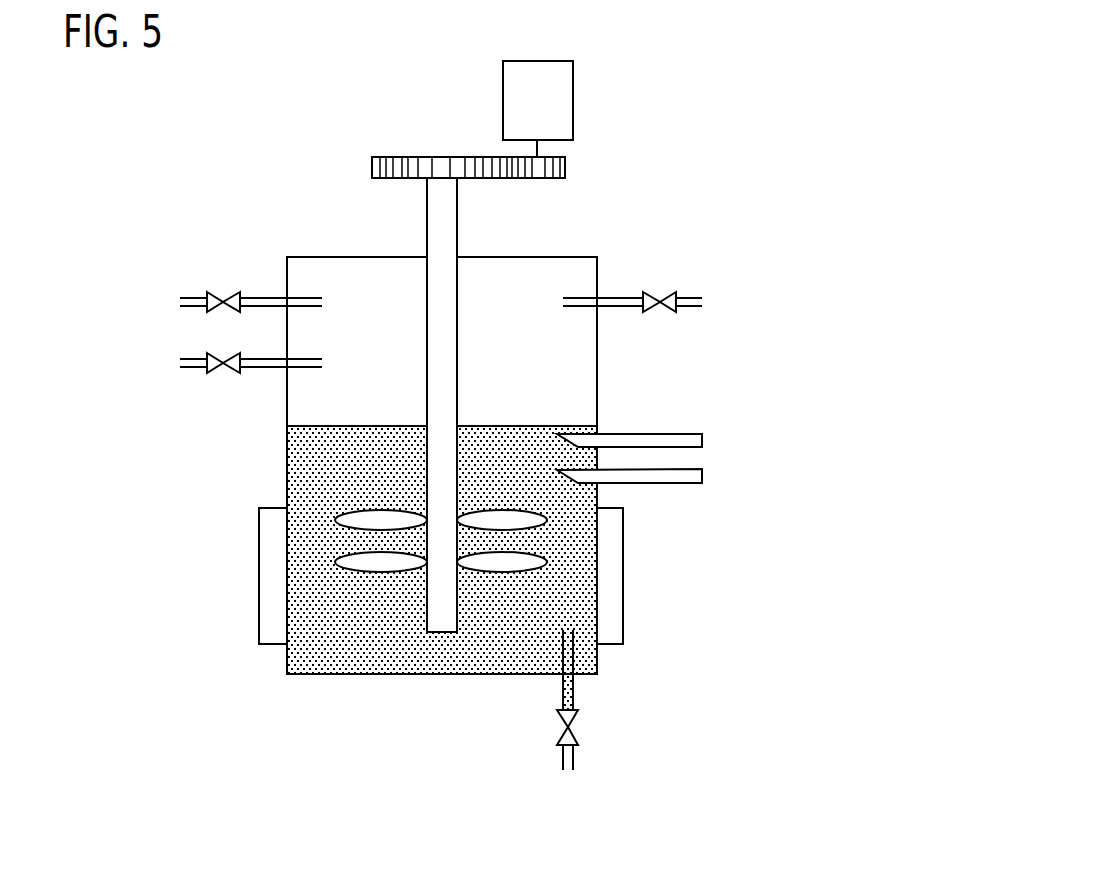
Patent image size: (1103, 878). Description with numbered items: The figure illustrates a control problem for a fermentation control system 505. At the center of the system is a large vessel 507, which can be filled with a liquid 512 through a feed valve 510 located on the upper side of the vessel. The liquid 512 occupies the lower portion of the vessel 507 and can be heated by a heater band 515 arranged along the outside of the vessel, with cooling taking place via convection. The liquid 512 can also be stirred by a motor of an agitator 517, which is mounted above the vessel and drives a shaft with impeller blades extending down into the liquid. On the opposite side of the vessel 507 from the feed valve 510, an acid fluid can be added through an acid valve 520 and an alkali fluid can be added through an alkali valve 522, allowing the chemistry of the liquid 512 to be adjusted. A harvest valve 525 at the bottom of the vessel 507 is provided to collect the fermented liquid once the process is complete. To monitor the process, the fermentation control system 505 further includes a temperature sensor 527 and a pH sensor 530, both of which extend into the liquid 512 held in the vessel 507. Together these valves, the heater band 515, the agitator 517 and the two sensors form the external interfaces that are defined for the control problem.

The fermentation control system 505 is at (731, 127).
The vessel 507 is at (527, 257).
The feed valve 510 is at (688, 297).
The liquid 512 is at (497, 426).
The heater band 515 is at (259, 578).
The agitator 517 is at (503, 96).
The acid valve 520 is at (193, 297).
The alkali valve 522 is at (193, 368).
The harvest valve 525 is at (573, 762).
The temperature sensor 527 is at (688, 433).
The pH sensor 530 is at (688, 484).